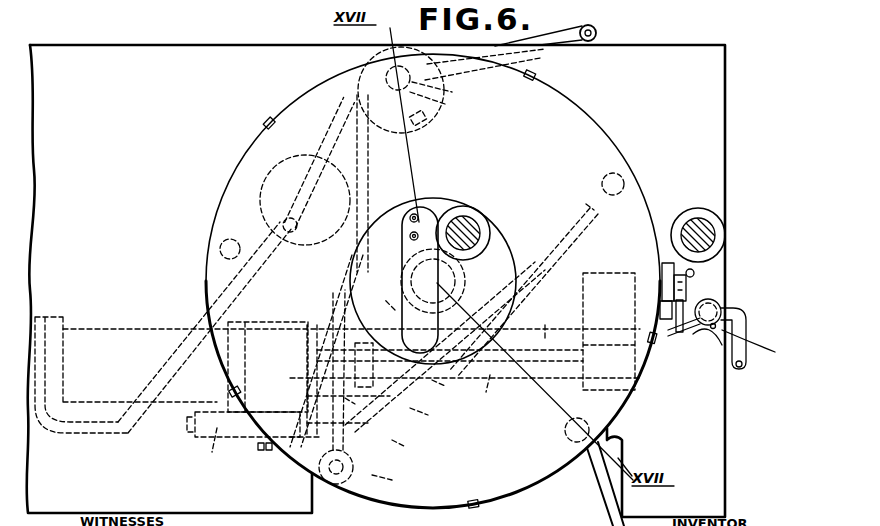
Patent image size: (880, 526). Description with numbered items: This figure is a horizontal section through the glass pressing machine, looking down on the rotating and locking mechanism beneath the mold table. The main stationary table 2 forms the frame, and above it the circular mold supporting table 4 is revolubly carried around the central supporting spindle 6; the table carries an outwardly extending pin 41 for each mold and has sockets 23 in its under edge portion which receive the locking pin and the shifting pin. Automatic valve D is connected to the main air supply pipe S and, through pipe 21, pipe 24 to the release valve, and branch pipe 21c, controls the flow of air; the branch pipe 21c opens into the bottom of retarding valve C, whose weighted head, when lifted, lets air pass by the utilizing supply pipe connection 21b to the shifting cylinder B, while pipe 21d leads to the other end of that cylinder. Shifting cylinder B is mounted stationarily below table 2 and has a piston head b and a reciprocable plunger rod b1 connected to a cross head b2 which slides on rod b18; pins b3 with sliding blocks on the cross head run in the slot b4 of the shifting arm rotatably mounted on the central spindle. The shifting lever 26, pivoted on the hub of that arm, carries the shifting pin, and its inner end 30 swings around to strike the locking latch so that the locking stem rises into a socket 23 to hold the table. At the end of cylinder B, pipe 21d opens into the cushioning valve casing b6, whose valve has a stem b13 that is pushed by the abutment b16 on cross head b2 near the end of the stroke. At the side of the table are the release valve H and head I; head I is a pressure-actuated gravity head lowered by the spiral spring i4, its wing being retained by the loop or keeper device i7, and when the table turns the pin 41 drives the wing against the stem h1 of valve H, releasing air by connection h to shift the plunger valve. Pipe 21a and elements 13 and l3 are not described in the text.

The main stationary table 2 is at (376, 281).
The mold supporting table 4 is at (583, 120).
The pin 41 is at (664, 362).
The central supporting spindle or standard 6 is at (360, 268).
The bearing 13 is at (470, 226).
The pipe 21 is at (418, 214).
The pins 21a is at (409, 236).
The utilizing supply pipe connection 21b is at (255, 286).
The branch pipe 21c is at (340, 128).
The pipe 21d is at (300, 470).
The socket 23 is at (220, 249).
The pipe 24 is at (598, 500).
The shifting lever 26 is at (409, 447).
The inner end of lever 26 30 is at (582, 232).
The shifting cylinder B is at (131, 342).
The retarding valve C is at (262, 190).
The automatic valve D is at (445, 100).
The main air supply pipe S is at (597, 33).
The release valve H is at (686, 290).
The connection h is at (694, 273).
The stem h1 is at (660, 306).
The head I is at (718, 306).
The loop or keeper device i7 is at (708, 352).
The spring i4 is at (756, 348).
The rod l3 is at (678, 332).
The piston head b is at (351, 272).
The reciprocable plunger rod b1 is at (491, 393).
The cross head b2 is at (380, 301).
The pins b3 is at (447, 388).
The slot b4 is at (338, 401).
The cushioning valve casing b6 is at (211, 452).
The stem b13 is at (393, 485).
The abutment b16 is at (431, 415).
The rod b18 is at (544, 322).